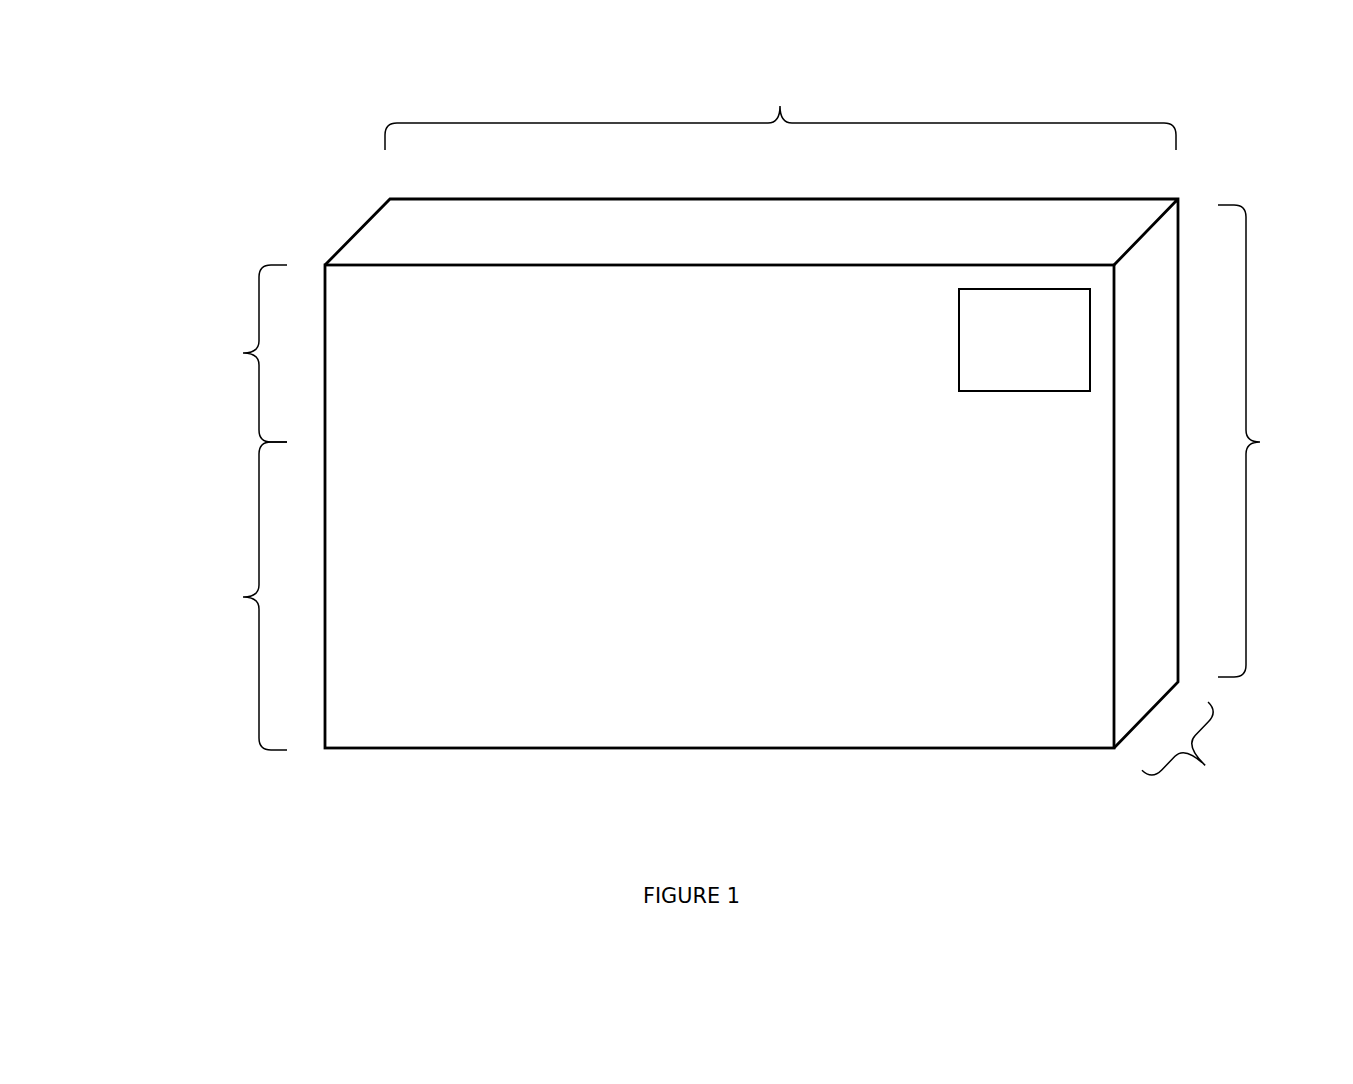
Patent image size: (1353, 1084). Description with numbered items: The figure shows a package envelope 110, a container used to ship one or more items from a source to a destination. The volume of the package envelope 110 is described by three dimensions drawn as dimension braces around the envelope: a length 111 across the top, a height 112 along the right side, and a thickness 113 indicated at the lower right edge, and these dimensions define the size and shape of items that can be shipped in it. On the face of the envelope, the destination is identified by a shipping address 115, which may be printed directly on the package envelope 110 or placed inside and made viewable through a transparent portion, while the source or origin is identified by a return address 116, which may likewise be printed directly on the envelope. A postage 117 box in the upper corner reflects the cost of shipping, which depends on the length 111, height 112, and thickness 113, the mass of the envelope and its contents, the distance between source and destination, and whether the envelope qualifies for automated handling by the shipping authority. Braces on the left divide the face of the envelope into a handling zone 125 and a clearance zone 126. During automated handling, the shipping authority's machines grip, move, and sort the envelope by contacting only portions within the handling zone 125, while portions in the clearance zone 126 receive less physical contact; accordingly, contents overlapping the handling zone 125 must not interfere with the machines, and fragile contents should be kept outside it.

The package envelope 110 is at (781, 768).
The length 111 is at (780, 114).
The height 112 is at (1271, 441).
The thickness 113 is at (1211, 772).
The shipping address 115 is at (635, 588).
The return address 116 is at (558, 398).
The postage 117 is at (1041, 364).
The handling zone 125 is at (185, 596).
The clearance zone 126 is at (186, 353).